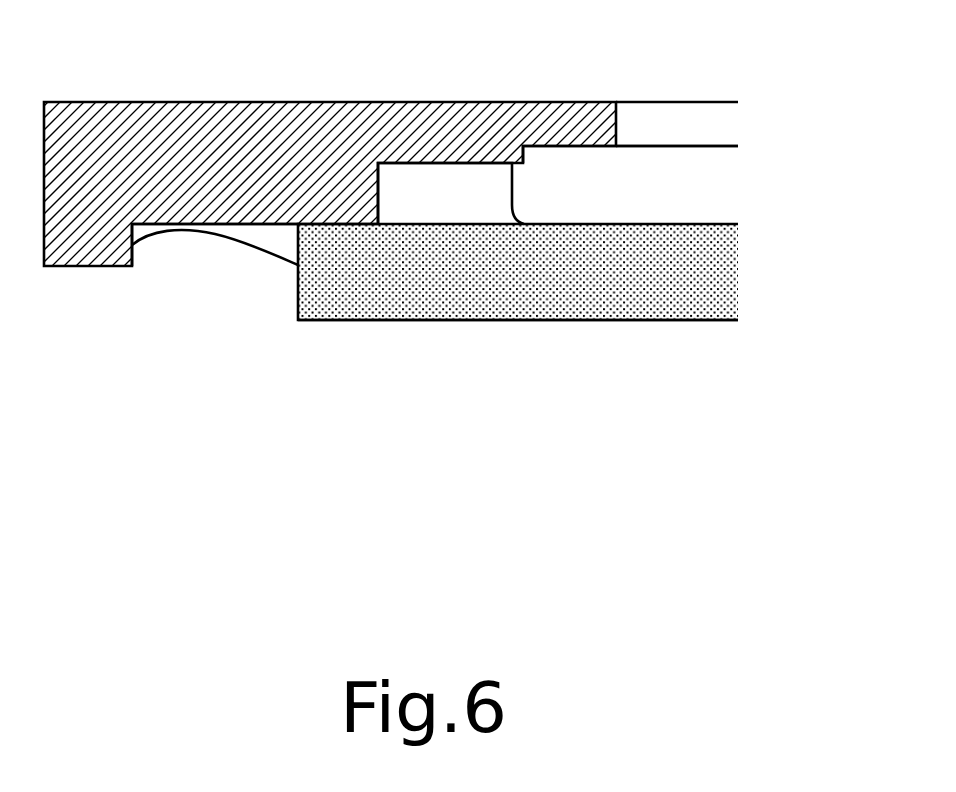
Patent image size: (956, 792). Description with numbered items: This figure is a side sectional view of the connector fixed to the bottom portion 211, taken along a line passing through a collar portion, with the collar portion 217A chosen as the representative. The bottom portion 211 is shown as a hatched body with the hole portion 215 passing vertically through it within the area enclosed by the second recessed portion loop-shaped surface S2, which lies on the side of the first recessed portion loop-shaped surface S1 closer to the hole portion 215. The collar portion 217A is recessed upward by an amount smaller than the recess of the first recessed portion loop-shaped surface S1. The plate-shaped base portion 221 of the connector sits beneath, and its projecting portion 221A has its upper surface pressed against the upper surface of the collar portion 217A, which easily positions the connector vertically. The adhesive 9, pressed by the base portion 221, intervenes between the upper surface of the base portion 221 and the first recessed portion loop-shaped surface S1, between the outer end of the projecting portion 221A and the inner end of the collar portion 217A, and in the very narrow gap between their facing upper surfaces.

The bottom portion 211 is at (100, 102).
The hole portion 215 is at (618, 120).
The base portion 221 is at (717, 224).
The projecting portion 221A is at (330, 320).
The collar portion 217A is at (150, 250).
The adhesive 9 is at (253, 250).
The first recessed portion loop-shaped surface S1 is at (437, 164).
The second recessed portion loop-shaped surface S2 is at (589, 147).